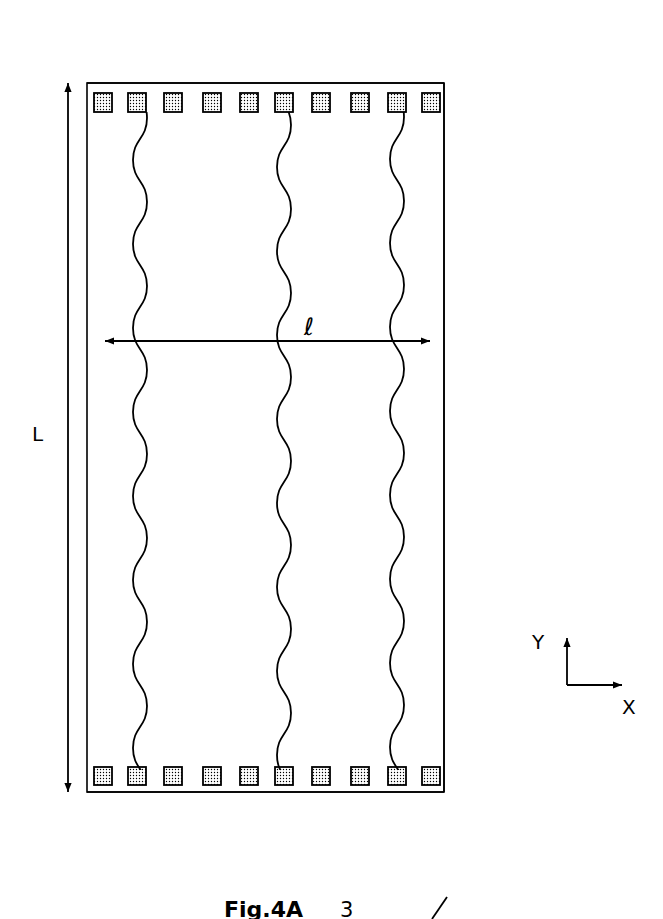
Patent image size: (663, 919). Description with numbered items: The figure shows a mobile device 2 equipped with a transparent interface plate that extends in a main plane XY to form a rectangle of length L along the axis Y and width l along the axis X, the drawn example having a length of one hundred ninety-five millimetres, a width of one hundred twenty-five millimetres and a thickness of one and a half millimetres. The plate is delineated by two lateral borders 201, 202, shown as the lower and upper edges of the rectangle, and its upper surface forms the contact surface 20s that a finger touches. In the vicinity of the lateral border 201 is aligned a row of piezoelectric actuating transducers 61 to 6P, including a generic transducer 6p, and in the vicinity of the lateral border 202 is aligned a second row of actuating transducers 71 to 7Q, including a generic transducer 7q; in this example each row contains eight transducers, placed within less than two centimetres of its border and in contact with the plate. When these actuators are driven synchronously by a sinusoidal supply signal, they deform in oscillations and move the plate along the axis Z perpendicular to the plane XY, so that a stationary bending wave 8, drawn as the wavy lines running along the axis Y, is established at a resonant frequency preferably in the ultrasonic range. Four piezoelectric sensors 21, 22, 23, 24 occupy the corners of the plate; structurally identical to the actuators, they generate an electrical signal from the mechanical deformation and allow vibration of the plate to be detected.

The mobile device 2 is at (434, 185).
The contact surface 20s is at (392, 288).
The lateral border 202 is at (248, 82).
The lateral border 201 is at (231, 793).
The piezoelectric sensor 24 is at (104, 92).
The actuating transducer 7Q is at (134, 100).
The actuating transducer 7q is at (282, 98).
The actuating transducer 71 is at (397, 100).
The piezoelectric sensor 23 is at (432, 100).
The stationary bending wave 8 is at (405, 455).
The piezoelectric sensor 22 is at (105, 773).
The actuating transducer 6P is at (137, 778).
The actuating transducer 6p is at (285, 780).
The actuating transducer 61 is at (396, 780).
The piezoelectric sensor 21 is at (430, 778).